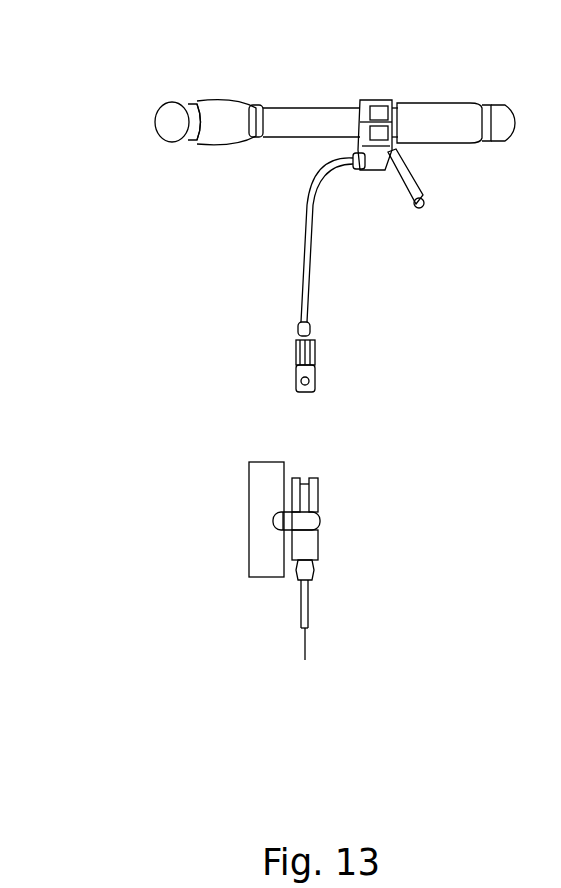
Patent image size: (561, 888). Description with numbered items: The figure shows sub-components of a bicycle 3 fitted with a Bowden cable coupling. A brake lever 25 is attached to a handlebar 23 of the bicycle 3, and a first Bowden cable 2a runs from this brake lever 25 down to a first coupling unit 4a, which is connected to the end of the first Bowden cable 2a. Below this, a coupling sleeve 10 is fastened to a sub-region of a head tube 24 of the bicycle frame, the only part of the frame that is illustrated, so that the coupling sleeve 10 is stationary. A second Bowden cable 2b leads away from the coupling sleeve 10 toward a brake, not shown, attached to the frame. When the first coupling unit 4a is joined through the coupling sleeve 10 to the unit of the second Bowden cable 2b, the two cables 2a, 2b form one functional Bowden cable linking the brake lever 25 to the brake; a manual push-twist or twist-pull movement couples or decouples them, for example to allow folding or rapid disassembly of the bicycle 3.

The bicycle 3 is at (116, 88).
The handlebar 23 is at (298, 122).
The brake lever 25 is at (398, 180).
The first Bowden cable 2a is at (310, 223).
The first coupling unit 4a is at (313, 363).
The head tube 24 is at (258, 555).
The coupling sleeve 10 is at (310, 557).
The second Bowden cable 2b is at (303, 617).